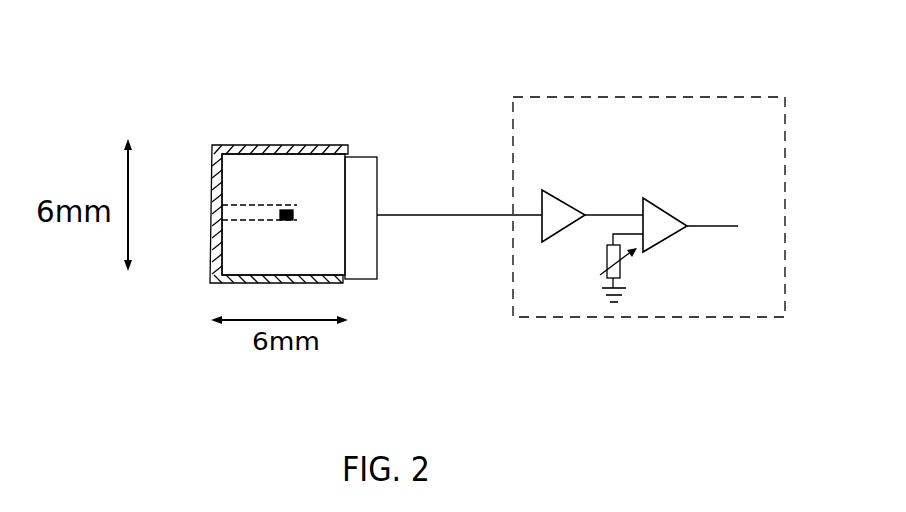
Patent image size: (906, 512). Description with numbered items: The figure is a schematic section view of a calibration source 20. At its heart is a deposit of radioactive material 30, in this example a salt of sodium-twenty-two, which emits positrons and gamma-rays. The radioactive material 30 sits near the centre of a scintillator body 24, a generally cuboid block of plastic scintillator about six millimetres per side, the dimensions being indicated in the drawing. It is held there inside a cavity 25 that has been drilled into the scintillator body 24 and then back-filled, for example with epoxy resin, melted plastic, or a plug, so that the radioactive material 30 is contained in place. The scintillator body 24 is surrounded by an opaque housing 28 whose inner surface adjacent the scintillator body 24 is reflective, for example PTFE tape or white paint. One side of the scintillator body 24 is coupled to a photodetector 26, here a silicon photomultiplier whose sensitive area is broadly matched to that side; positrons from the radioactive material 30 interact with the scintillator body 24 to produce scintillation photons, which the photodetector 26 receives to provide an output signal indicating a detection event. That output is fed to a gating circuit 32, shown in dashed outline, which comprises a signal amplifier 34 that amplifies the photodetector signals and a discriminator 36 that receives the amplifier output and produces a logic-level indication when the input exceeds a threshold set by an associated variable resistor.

The calibration source 20 is at (162, 112).
The scintillator body 24 is at (237, 165).
The cavity 25 is at (240, 221).
The photodetector 26 is at (365, 177).
The opaque housing 28 is at (227, 143).
The radioactive material 30 is at (297, 210).
The gating circuit 32 is at (658, 97).
The signal amplifier 34 is at (552, 190).
The discriminator 36 is at (672, 199).